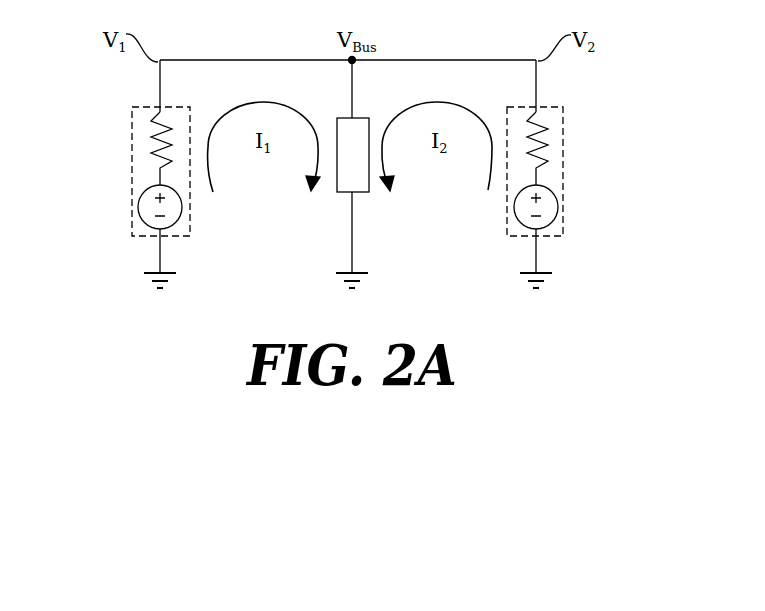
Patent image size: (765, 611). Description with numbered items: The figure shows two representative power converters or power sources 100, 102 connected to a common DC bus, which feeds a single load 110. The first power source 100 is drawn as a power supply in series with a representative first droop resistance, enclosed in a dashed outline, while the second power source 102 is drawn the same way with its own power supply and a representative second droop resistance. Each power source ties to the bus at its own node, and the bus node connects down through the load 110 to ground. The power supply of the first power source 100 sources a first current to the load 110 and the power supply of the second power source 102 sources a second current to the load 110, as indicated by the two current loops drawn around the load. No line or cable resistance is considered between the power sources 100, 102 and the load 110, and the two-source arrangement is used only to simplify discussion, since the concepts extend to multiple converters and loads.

The power source 100 is at (133, 234).
The power source 102 is at (562, 233).
The load 110 is at (355, 190).